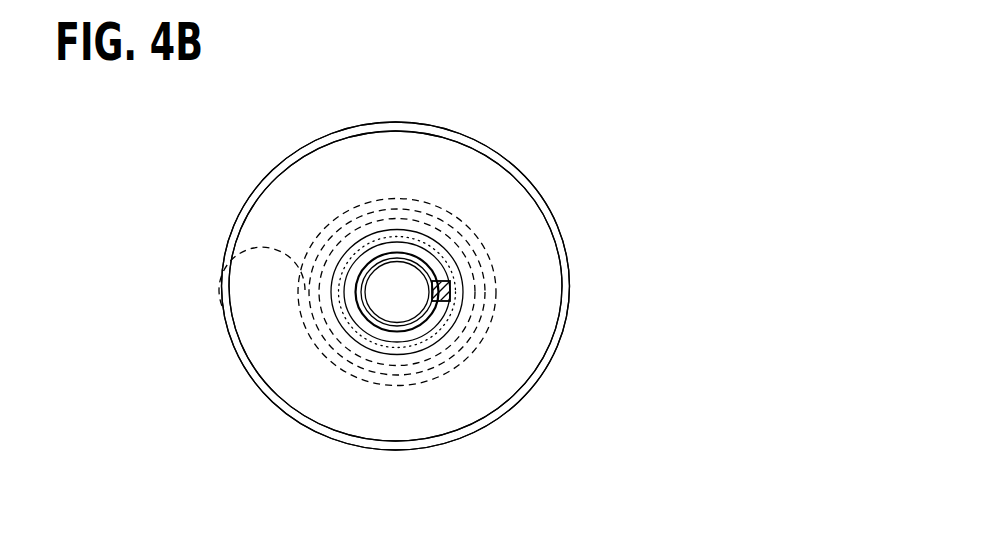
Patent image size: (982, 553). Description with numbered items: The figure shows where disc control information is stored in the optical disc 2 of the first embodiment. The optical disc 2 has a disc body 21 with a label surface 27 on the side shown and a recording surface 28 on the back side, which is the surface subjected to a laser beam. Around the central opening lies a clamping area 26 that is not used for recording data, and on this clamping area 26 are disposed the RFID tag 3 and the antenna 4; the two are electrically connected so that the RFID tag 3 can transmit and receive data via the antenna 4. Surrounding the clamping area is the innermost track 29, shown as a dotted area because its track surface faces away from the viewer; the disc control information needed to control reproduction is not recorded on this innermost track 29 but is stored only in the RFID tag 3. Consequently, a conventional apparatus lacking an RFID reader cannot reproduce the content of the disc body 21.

The optical disc 2 is at (492, 102).
The disc body 21 is at (243, 210).
The label surface 27 is at (490, 167).
The recording surface 28 is at (222, 306).
The innermost track 29 is at (427, 343).
The antenna 4 is at (353, 288).
The clamping area 26 is at (362, 323).
The RFID tag 3 is at (451, 285).